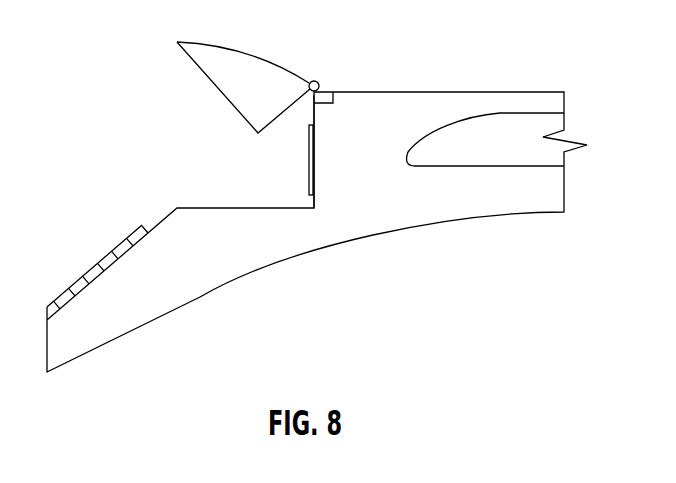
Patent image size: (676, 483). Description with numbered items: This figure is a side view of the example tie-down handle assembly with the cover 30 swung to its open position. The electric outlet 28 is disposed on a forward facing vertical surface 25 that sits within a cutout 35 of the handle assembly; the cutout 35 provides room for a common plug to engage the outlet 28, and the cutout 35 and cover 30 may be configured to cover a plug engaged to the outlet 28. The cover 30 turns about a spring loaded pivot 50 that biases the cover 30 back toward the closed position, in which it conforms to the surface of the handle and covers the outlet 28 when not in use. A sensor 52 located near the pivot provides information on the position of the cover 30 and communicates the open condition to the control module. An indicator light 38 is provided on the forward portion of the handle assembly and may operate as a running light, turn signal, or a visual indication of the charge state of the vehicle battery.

The forward facing vertical surface 25 is at (306, 201).
The electric outlet 28 is at (299, 152).
The cover 30 is at (267, 75).
The cutout 35 is at (276, 171).
The indicator light 38 is at (92, 261).
The spring loaded pivot 50 is at (322, 79).
The sensor 52 is at (337, 99).